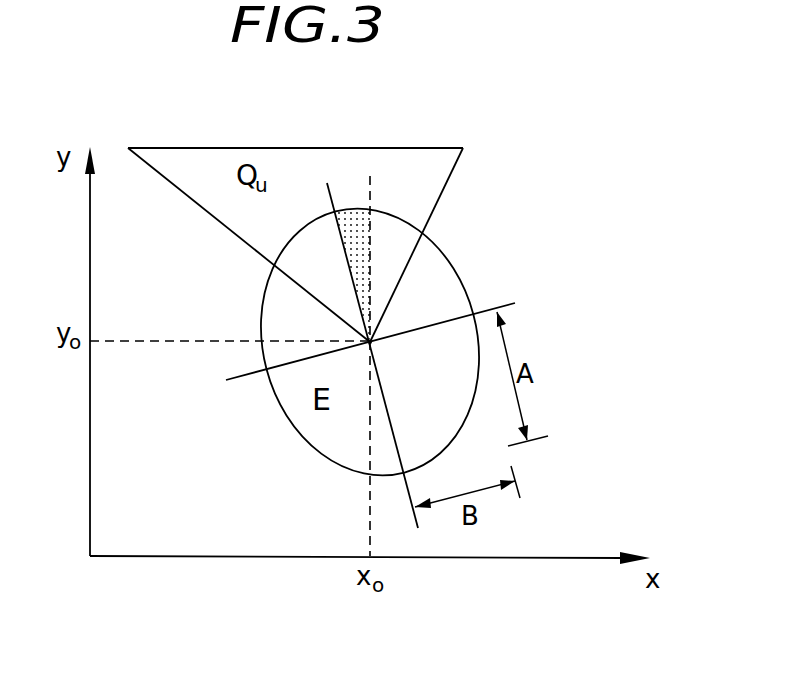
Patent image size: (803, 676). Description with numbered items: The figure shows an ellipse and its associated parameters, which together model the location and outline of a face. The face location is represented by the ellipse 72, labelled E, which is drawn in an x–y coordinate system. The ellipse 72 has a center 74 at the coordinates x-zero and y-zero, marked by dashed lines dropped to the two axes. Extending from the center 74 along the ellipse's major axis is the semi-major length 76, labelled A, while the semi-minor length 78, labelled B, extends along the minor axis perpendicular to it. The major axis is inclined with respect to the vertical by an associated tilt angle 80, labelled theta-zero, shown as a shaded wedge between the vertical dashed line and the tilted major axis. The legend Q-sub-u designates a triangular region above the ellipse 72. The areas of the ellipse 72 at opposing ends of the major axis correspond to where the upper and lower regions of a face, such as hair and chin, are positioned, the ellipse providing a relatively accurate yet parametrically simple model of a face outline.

The ellipse 72 is at (304, 438).
The center 74 is at (372, 344).
The semi-major length 76 is at (397, 441).
The semi-minor length 78 is at (441, 321).
The tilt angle 80 is at (361, 164).